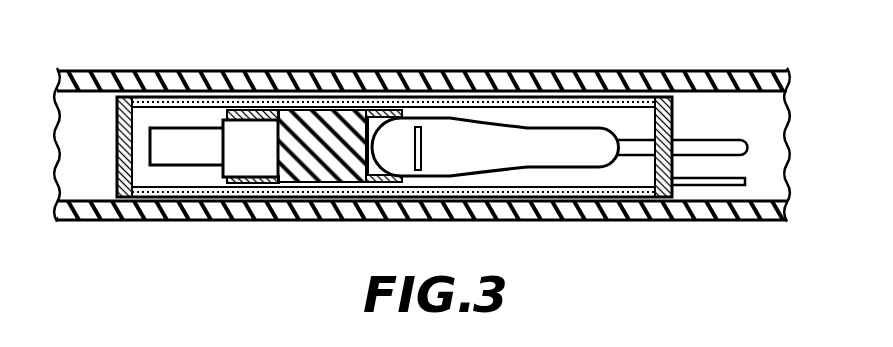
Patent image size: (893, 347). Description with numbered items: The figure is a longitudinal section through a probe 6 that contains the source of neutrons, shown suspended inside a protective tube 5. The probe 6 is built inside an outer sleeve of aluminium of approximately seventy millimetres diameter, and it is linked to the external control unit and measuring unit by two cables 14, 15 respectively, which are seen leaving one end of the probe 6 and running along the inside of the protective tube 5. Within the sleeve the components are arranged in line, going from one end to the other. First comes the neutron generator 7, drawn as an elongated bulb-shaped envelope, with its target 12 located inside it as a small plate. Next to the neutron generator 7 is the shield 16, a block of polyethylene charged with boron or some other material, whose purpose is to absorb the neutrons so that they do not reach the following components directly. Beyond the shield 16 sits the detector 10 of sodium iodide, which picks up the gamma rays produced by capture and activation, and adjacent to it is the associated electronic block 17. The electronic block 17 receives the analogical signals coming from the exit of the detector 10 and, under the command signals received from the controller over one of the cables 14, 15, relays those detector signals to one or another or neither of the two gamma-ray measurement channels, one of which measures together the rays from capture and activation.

The protective tube 5 is at (711, 71).
The probe 6 is at (104, 120).
The neutron generator 7 is at (487, 135).
The detector 10 is at (250, 142).
The target 12 is at (425, 134).
The cable 14 is at (712, 146).
The cable 15 is at (720, 186).
The shield 16 is at (318, 135).
The electronic block 17 is at (181, 142).